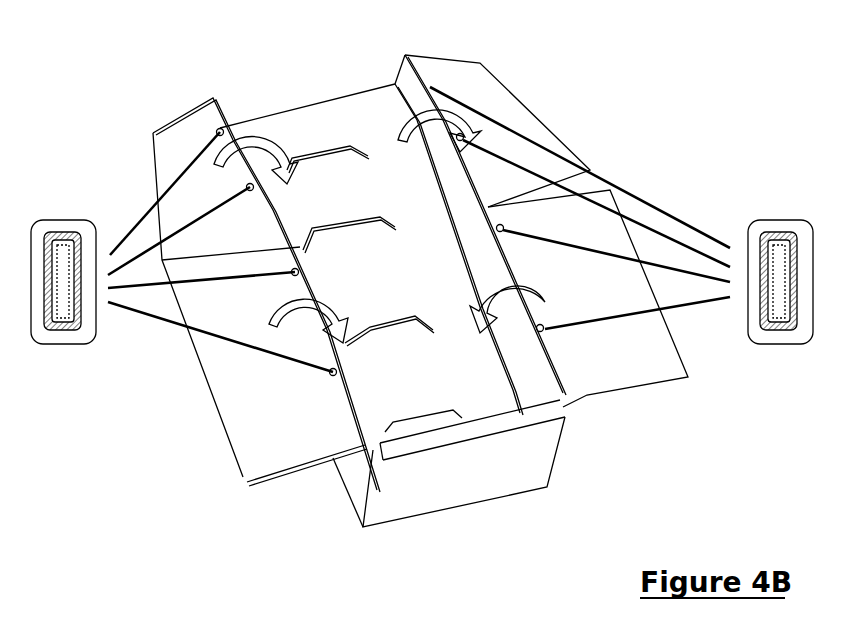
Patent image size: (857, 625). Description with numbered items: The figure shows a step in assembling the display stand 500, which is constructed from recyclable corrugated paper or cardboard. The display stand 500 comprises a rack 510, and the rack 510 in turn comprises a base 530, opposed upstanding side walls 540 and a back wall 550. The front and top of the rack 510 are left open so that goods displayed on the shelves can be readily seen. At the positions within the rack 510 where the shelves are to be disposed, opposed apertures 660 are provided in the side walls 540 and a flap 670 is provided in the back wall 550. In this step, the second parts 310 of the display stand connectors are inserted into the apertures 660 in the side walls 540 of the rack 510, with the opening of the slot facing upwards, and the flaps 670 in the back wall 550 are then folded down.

The second part of display stand connector 310 is at (430, 229).
The display stand 500 is at (403, 313).
The rack 510 is at (387, 498).
The base 530 is at (449, 487).
The side walls 540 is at (386, 273).
The back wall 550 is at (328, 120).
The apertures 660 is at (416, 253).
The flap 670 is at (317, 167).